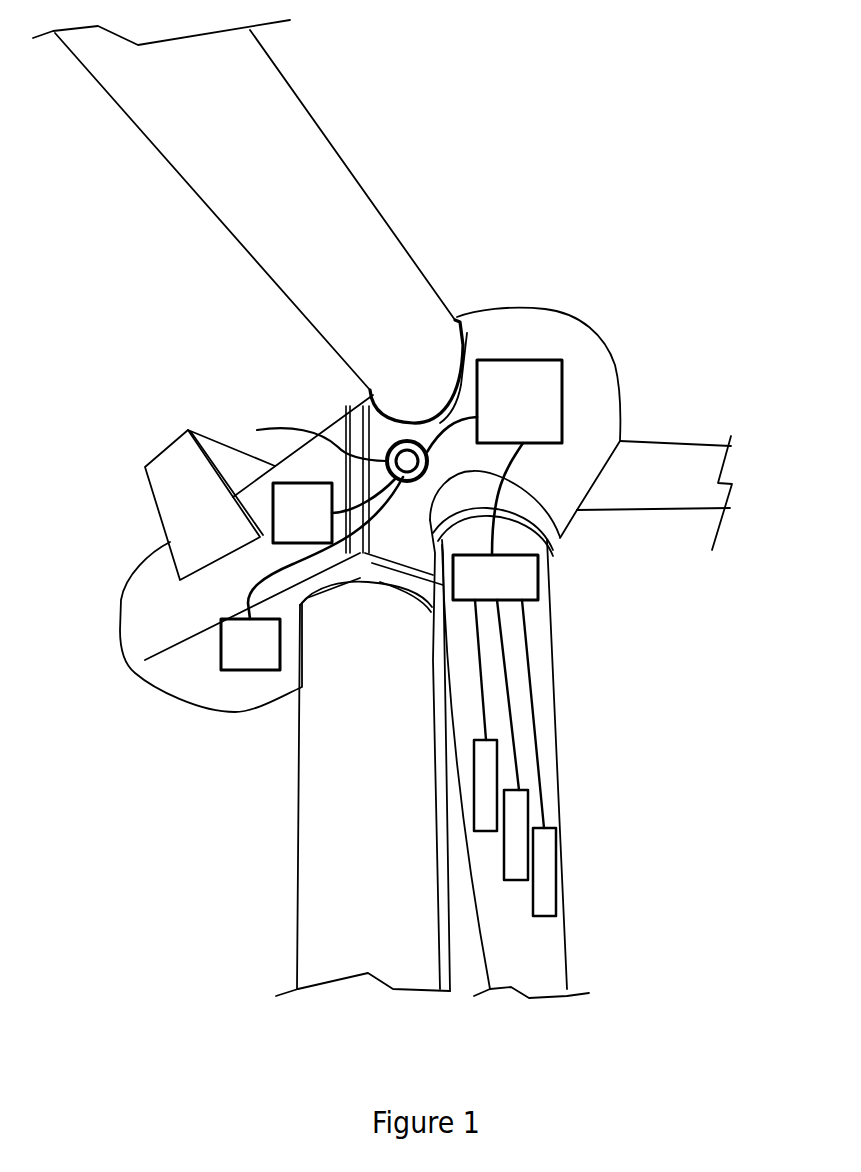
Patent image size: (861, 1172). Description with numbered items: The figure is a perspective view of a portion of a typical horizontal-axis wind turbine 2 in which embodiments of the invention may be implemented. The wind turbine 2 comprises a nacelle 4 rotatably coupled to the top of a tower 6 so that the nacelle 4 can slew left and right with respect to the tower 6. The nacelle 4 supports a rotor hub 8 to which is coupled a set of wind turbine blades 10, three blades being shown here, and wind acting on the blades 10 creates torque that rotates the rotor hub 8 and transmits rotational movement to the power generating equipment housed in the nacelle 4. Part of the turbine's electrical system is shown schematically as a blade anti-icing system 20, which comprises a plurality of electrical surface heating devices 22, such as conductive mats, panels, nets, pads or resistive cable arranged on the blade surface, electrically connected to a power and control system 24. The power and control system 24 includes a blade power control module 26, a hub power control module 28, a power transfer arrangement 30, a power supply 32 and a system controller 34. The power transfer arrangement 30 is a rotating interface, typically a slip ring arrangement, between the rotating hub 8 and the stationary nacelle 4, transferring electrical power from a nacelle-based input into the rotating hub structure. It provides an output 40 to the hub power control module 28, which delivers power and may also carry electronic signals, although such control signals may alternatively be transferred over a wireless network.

The wind turbine 2 is at (646, 154).
The nacelle 4 is at (150, 600).
The tower 6 is at (321, 869).
The rotor hub 8 is at (587, 348).
The wind turbine blades 10 is at (167, 153).
The blade anti-icing system 20 is at (660, 635).
The electrical surface heating devices 22 is at (485, 768).
The power and control system 24 is at (328, 403).
The blade power control module 26 is at (498, 691).
The hub power control module 28 is at (494, 457).
The power transfer arrangement 30 is at (308, 439).
The power supply 32 is at (312, 573).
The system controller 34 is at (334, 510).
The output 40 is at (437, 438).